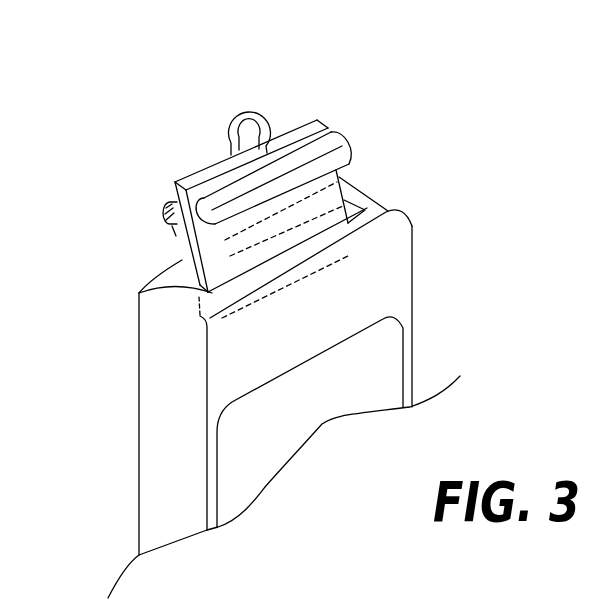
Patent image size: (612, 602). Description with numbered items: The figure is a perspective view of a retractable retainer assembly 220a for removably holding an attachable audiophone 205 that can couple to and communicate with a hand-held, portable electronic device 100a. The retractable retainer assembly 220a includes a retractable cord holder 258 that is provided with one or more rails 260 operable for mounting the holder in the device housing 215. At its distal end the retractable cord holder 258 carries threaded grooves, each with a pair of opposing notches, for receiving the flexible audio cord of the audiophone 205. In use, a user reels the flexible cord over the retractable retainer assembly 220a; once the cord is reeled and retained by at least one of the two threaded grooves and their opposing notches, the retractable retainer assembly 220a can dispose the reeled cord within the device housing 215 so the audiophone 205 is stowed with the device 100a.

The hand-held, portable electronic device 100a is at (452, 181).
The audiophone 205 is at (108, 478).
The device housing 215 is at (388, 211).
The retractable retainer assembly 220a is at (285, 109).
The retractable cord holder 258 is at (250, 108).
The rails 260 is at (362, 222).